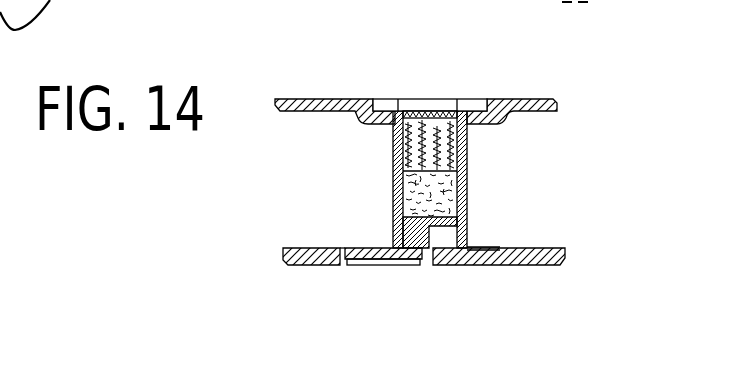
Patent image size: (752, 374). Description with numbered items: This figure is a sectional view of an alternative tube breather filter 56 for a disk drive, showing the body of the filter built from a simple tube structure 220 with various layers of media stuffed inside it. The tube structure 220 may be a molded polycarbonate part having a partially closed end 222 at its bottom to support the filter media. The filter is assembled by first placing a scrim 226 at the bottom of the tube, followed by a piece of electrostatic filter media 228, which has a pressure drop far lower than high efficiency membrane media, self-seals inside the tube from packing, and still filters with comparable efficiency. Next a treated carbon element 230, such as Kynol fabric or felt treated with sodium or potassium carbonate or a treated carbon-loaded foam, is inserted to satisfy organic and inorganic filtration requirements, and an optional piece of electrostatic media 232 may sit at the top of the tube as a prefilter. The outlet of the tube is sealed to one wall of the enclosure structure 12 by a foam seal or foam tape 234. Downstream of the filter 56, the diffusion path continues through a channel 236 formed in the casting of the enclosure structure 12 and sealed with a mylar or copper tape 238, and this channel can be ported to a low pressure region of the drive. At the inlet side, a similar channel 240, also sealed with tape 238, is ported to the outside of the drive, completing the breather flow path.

The enclosure structure 12 is at (300, 247).
The tube breather filter 56 is at (450, 140).
The tube structure 220 is at (393, 196).
The partially closed end 222 is at (480, 245).
The scrim 226 is at (467, 233).
The electrostatic filter media 228 is at (447, 187).
The treated carbon element 230 is at (471, 146).
The electrostatic media 232 is at (433, 98).
The foam seal 234 is at (494, 249).
The channel 236 is at (408, 270).
The tape 238 is at (515, 98).
The channel 240 is at (323, 97).